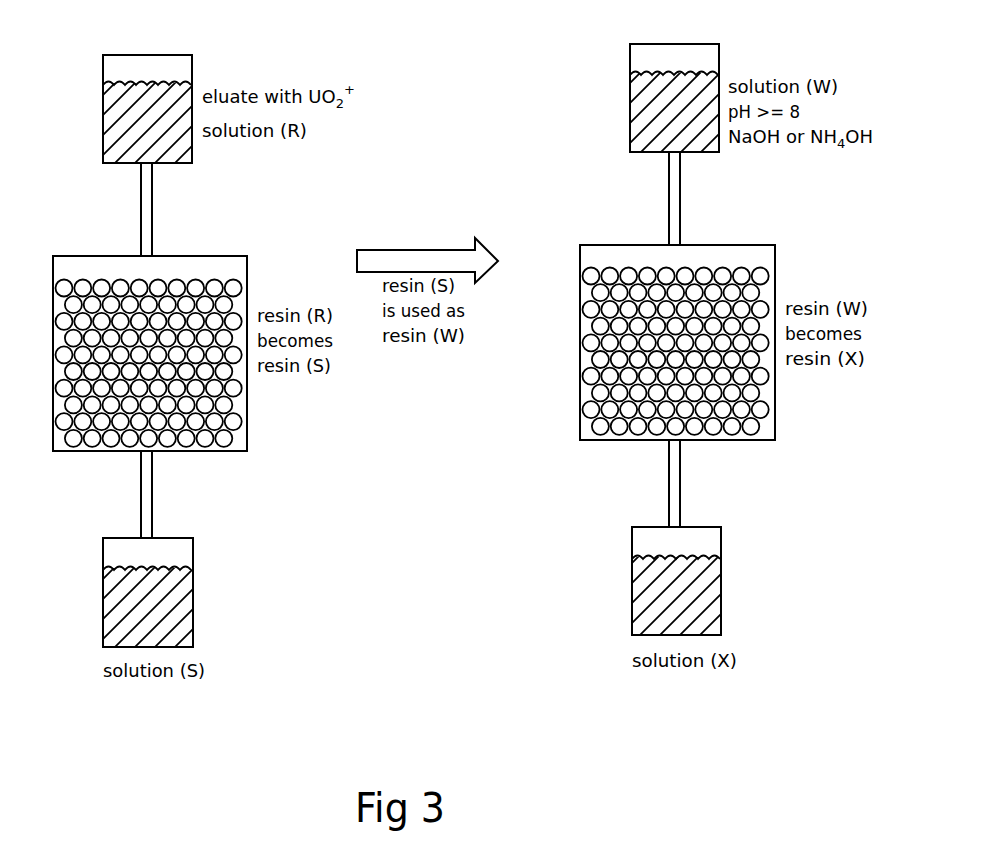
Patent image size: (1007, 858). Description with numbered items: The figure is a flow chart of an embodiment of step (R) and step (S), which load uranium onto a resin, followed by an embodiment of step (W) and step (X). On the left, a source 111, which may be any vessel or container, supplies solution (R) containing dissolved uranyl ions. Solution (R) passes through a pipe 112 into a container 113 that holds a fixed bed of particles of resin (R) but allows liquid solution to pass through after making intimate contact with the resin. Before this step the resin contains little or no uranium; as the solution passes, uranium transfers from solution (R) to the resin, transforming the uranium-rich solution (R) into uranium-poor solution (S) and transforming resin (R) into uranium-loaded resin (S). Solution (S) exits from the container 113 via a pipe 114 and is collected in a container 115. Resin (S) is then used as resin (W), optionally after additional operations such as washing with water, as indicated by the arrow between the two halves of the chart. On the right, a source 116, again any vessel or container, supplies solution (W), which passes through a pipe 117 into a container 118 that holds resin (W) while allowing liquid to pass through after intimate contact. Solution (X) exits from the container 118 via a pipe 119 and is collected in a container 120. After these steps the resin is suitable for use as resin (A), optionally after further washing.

The source 111 is at (108, 119).
The pipe 112 is at (140, 233).
The container 113 is at (55, 345).
The pipe 114 is at (140, 519).
The container 115 is at (187, 615).
The source 116 is at (637, 107).
The pipe 117 is at (667, 223).
The container 118 is at (583, 333).
The pipe 119 is at (668, 508).
The container 120 is at (715, 605).